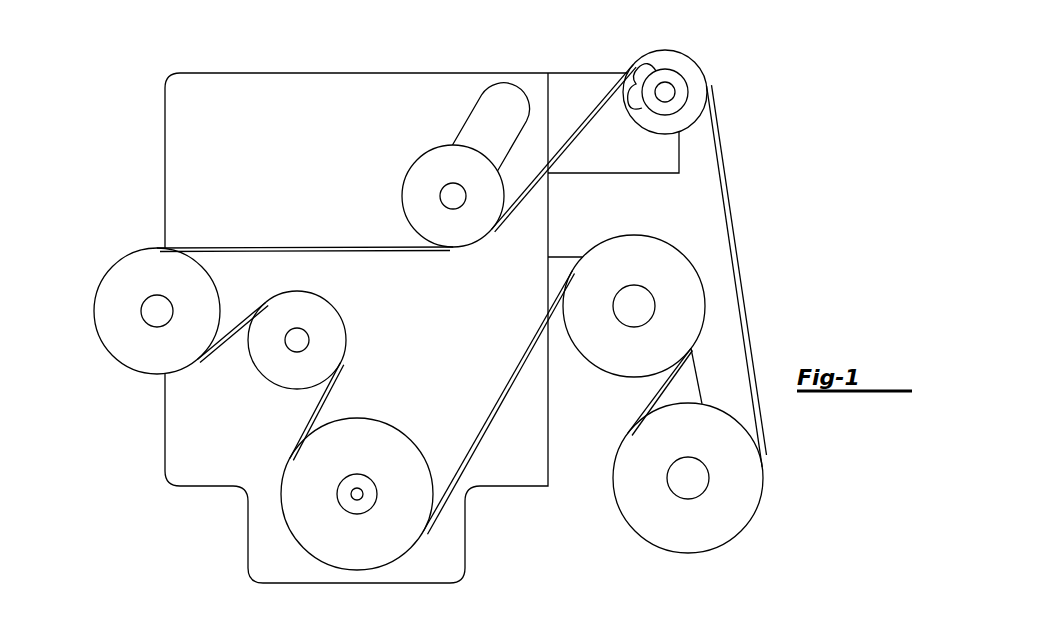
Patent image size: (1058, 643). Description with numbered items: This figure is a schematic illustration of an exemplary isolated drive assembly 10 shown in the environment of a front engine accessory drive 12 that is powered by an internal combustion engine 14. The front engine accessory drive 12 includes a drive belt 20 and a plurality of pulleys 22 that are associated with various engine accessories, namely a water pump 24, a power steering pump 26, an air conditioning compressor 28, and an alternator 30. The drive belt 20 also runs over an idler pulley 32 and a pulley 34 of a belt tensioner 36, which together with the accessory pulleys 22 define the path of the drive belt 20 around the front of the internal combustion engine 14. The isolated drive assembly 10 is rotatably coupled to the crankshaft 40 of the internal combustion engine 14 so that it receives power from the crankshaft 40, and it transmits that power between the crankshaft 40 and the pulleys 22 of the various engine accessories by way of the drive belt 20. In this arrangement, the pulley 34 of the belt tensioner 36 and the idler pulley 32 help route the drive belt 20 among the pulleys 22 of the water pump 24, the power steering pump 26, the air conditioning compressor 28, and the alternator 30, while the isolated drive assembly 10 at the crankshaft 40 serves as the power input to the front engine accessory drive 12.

The isolated drive assembly 10 is at (365, 508).
The front engine accessory drive 12 is at (340, 228).
The internal combustion engine 14 is at (350, 87).
The drive belt 20 is at (503, 390).
The pulleys 22 is at (427, 301).
The water pump 24 is at (303, 340).
The power steering pump 26 is at (150, 310).
The air conditioning compressor 28 is at (688, 478).
The alternator 30 is at (665, 92).
The idler pulley 32 is at (672, 283).
The pulley of belt tensioner 34 is at (420, 181).
The belt tensioner 36 is at (501, 102).
The crankshaft 40 is at (357, 494).